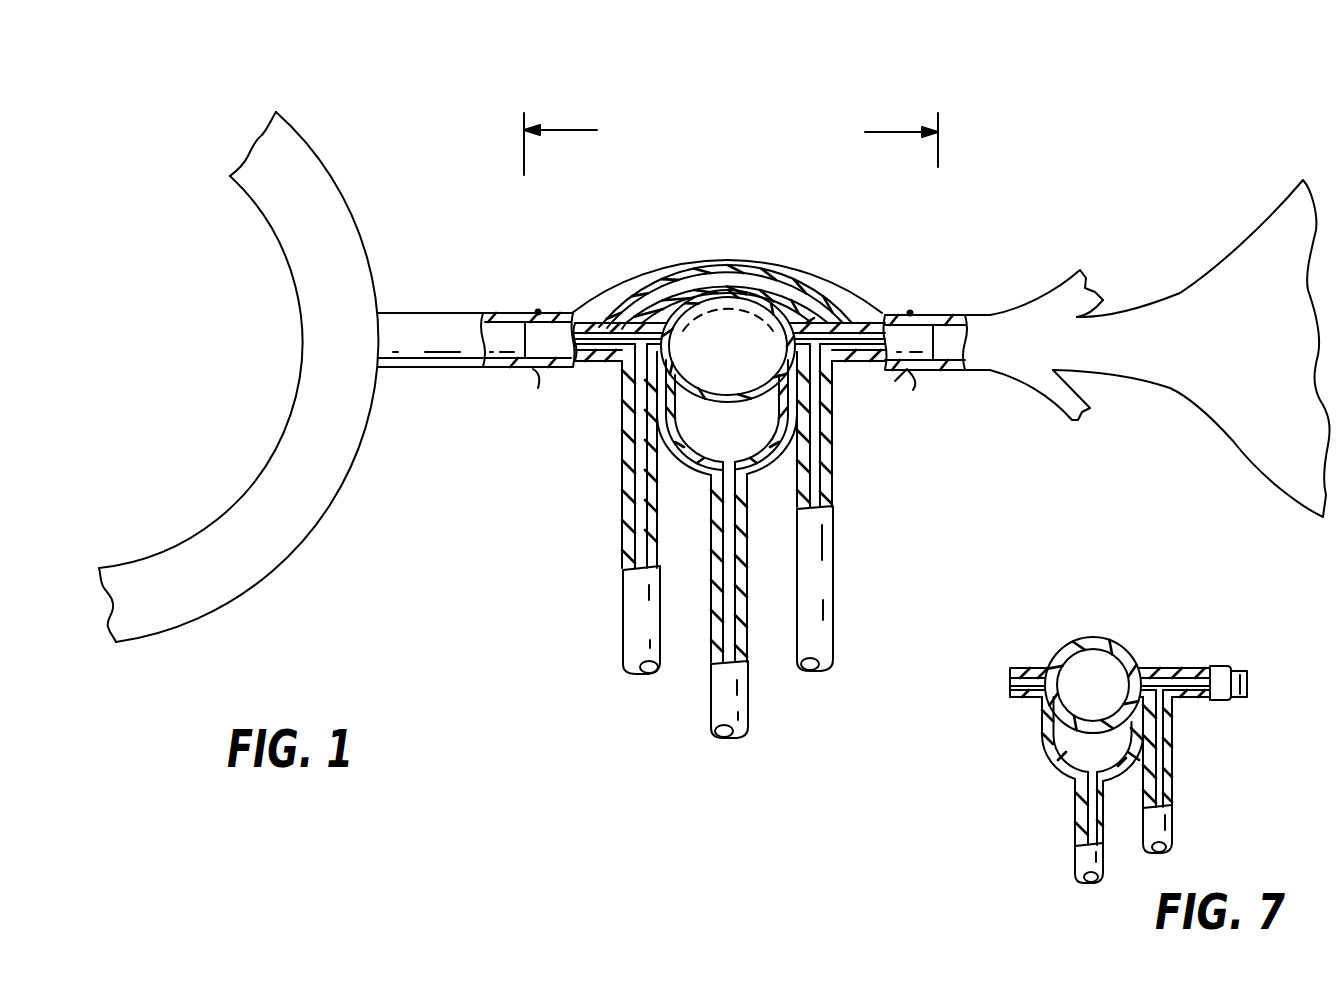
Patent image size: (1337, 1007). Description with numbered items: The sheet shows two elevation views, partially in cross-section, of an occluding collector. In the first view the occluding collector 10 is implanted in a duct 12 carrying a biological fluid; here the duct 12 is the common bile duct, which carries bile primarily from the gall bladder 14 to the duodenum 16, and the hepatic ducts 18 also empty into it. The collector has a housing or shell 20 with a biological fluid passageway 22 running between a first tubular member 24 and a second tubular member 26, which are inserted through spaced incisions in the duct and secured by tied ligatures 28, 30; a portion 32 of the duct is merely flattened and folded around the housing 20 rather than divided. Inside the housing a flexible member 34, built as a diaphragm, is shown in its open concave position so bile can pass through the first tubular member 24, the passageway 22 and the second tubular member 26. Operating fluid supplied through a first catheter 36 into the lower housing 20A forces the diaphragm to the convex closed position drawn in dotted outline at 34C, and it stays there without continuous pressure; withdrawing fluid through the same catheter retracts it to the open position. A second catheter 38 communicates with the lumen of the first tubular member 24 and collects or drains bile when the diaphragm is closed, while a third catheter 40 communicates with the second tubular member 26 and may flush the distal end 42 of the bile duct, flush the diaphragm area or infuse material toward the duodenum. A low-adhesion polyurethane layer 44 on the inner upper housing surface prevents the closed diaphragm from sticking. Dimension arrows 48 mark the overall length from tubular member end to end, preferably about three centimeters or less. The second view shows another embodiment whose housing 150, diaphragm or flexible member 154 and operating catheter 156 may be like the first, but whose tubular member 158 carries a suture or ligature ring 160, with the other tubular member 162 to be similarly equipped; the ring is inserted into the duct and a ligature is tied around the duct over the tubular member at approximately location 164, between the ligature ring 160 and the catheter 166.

In FIG. 1, the occluding collector 10 is at (820, 275).
In FIG. 1, the duct 12 is at (990, 315).
In FIG. 1, the gall bladder 14 is at (1240, 242).
In FIG. 1, the duodenum 16 is at (372, 257).
In FIG. 1, the hepatic ducts 18 is at (1087, 267).
In FIG. 1, the housing 20 is at (790, 282).
In FIG. 1, the lower housing 20A is at (760, 460).
In FIG. 1, the biological fluid passageway 22 is at (728, 318).
In FIG. 1, the first tubular member 24 is at (855, 295).
In FIG. 1, the second tubular member 26 is at (645, 272).
In FIG. 1, the tied ligature 28 is at (912, 388).
In FIG. 1, the tied ligature 30 is at (527, 373).
In FIG. 1, the portion of duct 32 is at (862, 278).
In FIG. 1, the flexible member 34 is at (743, 402).
In FIG. 1, the closed position of diaphragm 34C is at (765, 319).
In FIG. 1, the first catheter 36 is at (750, 707).
In FIG. 1, the second catheter 38 is at (834, 590).
In FIG. 1, the third catheter 40 is at (623, 628).
In FIG. 1, the distal end of common bile duct 42 is at (440, 312).
In FIG. 1, the layer of material 44 is at (665, 283).
In FIG. 1, the dimension arrows 48 is at (589, 130).
In FIG. 7, the housing 150 is at (1095, 638).
In FIG. 7, the diaphragm or flexible member 154 is at (1077, 730).
In FIG. 7, the operating catheter 156 is at (1073, 858).
In FIG. 7, the tubular member 158 is at (1160, 668).
In FIG. 7, the ligature ring 160 is at (1222, 666).
In FIG. 7, the tubular member 162 is at (1027, 668).
In FIG. 7, the ligature location 164 is at (1195, 703).
In FIG. 7, the catheter 166 is at (1173, 823).